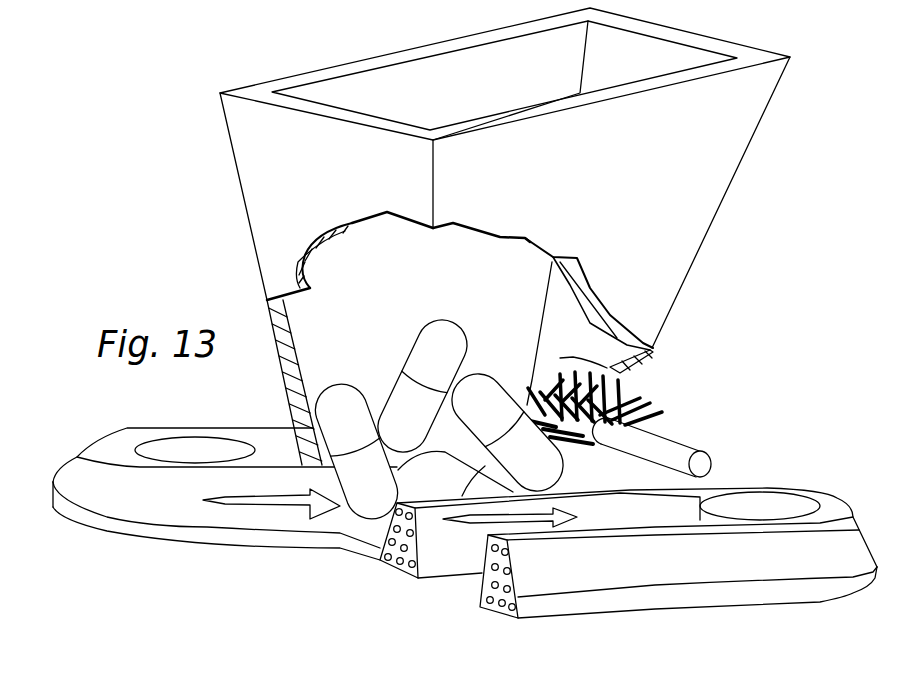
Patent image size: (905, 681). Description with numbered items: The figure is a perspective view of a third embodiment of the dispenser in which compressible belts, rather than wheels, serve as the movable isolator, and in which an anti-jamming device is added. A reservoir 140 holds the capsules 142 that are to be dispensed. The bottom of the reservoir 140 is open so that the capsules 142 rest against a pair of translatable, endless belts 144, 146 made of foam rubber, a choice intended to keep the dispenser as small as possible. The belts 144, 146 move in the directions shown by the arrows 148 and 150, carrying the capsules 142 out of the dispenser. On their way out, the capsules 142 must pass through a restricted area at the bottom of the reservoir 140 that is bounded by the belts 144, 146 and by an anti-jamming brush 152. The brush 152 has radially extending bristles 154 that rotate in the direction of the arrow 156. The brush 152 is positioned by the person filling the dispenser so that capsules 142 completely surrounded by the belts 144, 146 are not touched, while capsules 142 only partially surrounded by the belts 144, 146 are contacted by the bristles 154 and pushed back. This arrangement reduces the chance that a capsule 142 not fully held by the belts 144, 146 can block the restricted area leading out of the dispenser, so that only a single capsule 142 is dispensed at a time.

The reservoir 140 is at (685, 281).
The capsules 142 is at (480, 377).
The endless belt 144 is at (257, 548).
The endless belt 146 is at (522, 622).
The arrow 148 is at (223, 498).
The arrow 150 is at (447, 517).
The anti-jamming brush 152 is at (677, 433).
The bristles 154 is at (630, 390).
The arrow 156 is at (723, 462).